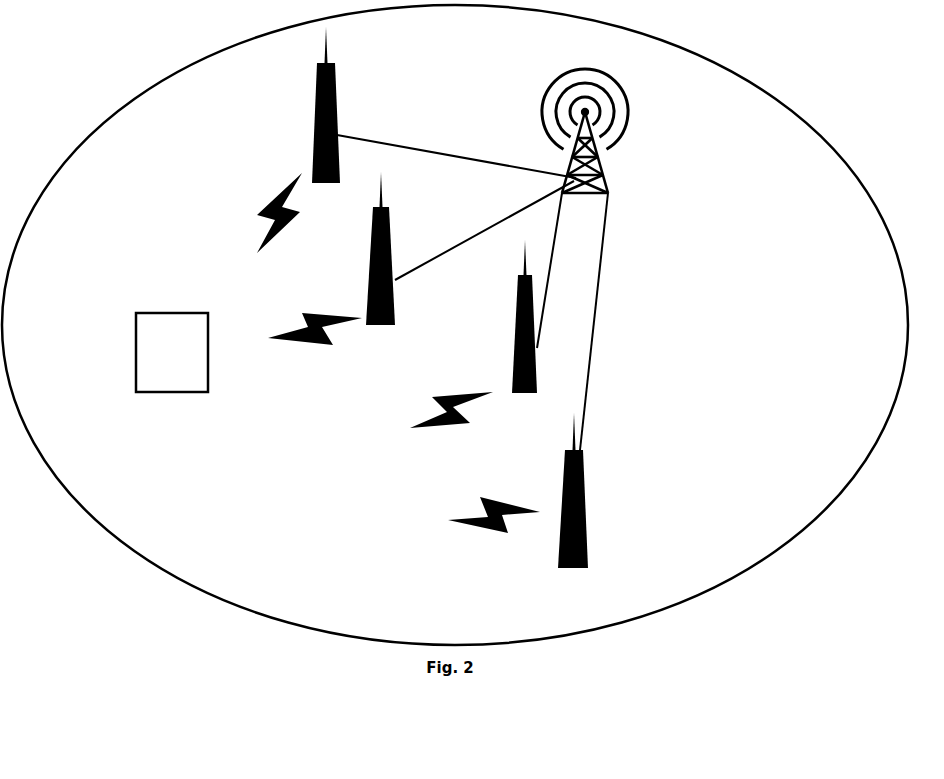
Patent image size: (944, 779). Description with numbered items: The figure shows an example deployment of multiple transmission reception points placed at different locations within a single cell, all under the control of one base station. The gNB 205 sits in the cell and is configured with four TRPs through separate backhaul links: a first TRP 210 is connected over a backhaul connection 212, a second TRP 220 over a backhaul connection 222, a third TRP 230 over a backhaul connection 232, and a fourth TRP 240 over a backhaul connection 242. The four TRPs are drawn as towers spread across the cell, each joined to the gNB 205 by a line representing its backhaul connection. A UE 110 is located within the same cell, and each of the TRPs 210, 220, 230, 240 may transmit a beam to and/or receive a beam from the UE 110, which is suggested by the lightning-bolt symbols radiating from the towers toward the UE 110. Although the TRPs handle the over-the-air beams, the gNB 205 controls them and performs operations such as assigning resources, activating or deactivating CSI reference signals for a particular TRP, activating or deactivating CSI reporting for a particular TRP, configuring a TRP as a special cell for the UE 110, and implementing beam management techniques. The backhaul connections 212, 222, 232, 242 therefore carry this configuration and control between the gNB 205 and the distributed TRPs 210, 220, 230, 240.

The UE 110 is at (172, 352).
The gNB 205 is at (605, 131).
The first TRP 210 is at (306, 105).
The backhaul connection 212 is at (456, 152).
The second TRP 220 is at (366, 248).
The backhaul connection 222 is at (484, 230).
The third TRP 230 is at (508, 316).
The backhaul connection 232 is at (556, 270).
The fourth TRP 240 is at (591, 490).
The backhaul connection 242 is at (597, 321).